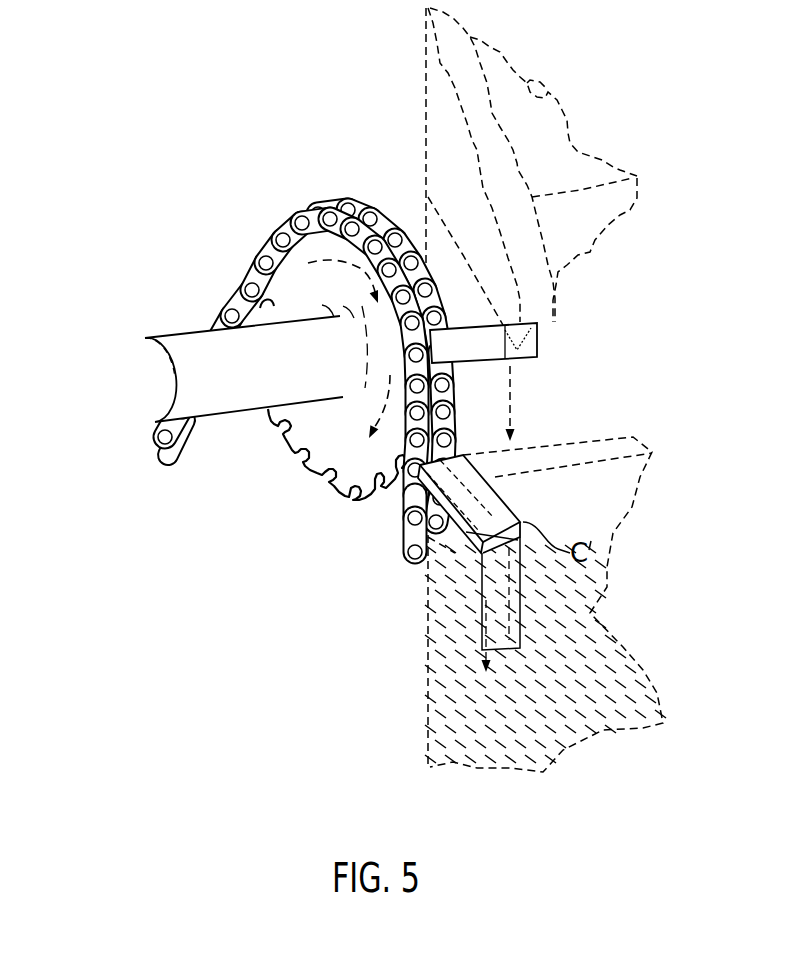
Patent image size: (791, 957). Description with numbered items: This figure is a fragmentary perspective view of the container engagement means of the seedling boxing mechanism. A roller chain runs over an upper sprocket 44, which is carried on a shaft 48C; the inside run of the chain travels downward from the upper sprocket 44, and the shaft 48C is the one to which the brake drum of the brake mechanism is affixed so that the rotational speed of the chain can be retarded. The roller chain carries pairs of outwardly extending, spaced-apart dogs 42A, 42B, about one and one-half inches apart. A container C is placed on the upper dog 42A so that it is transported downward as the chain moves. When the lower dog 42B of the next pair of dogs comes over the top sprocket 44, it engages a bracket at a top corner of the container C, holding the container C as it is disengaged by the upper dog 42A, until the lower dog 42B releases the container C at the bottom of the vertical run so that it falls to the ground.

The sprocket 44 is at (358, 447).
The shaft 48C is at (153, 340).
The upper dog 42A is at (538, 342).
The lower dog 42B is at (487, 492).
The container C is at (464, 178).